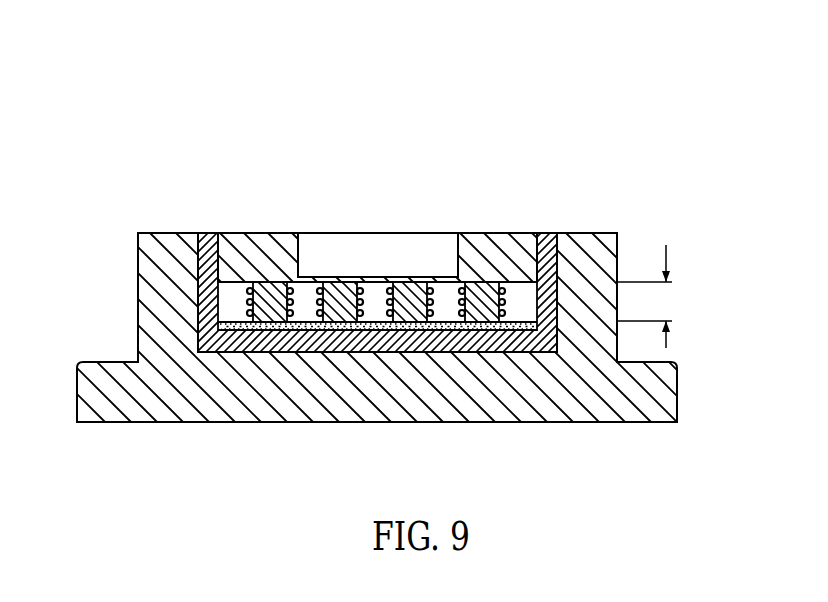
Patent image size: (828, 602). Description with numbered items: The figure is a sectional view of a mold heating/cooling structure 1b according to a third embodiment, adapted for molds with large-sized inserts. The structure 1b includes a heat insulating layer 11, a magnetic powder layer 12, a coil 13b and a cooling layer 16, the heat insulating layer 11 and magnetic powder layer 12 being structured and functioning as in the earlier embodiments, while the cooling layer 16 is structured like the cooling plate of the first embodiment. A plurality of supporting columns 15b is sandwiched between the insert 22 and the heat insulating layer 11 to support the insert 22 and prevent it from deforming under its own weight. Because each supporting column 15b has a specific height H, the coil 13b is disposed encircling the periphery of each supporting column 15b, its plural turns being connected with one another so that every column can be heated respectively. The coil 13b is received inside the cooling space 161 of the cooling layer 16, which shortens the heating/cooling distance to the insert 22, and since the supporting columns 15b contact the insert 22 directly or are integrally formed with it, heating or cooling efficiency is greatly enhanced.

The mold heating/cooling structure 1b is at (150, 131).
The heat insulating layer 11 is at (552, 248).
The magnetic powder layer 12 is at (207, 318).
The coil 13b is at (220, 293).
The supporting column 15b is at (360, 293).
The cooling layer 16 is at (252, 288).
The cooling space 161 is at (265, 290).
The insert 22 is at (506, 245).